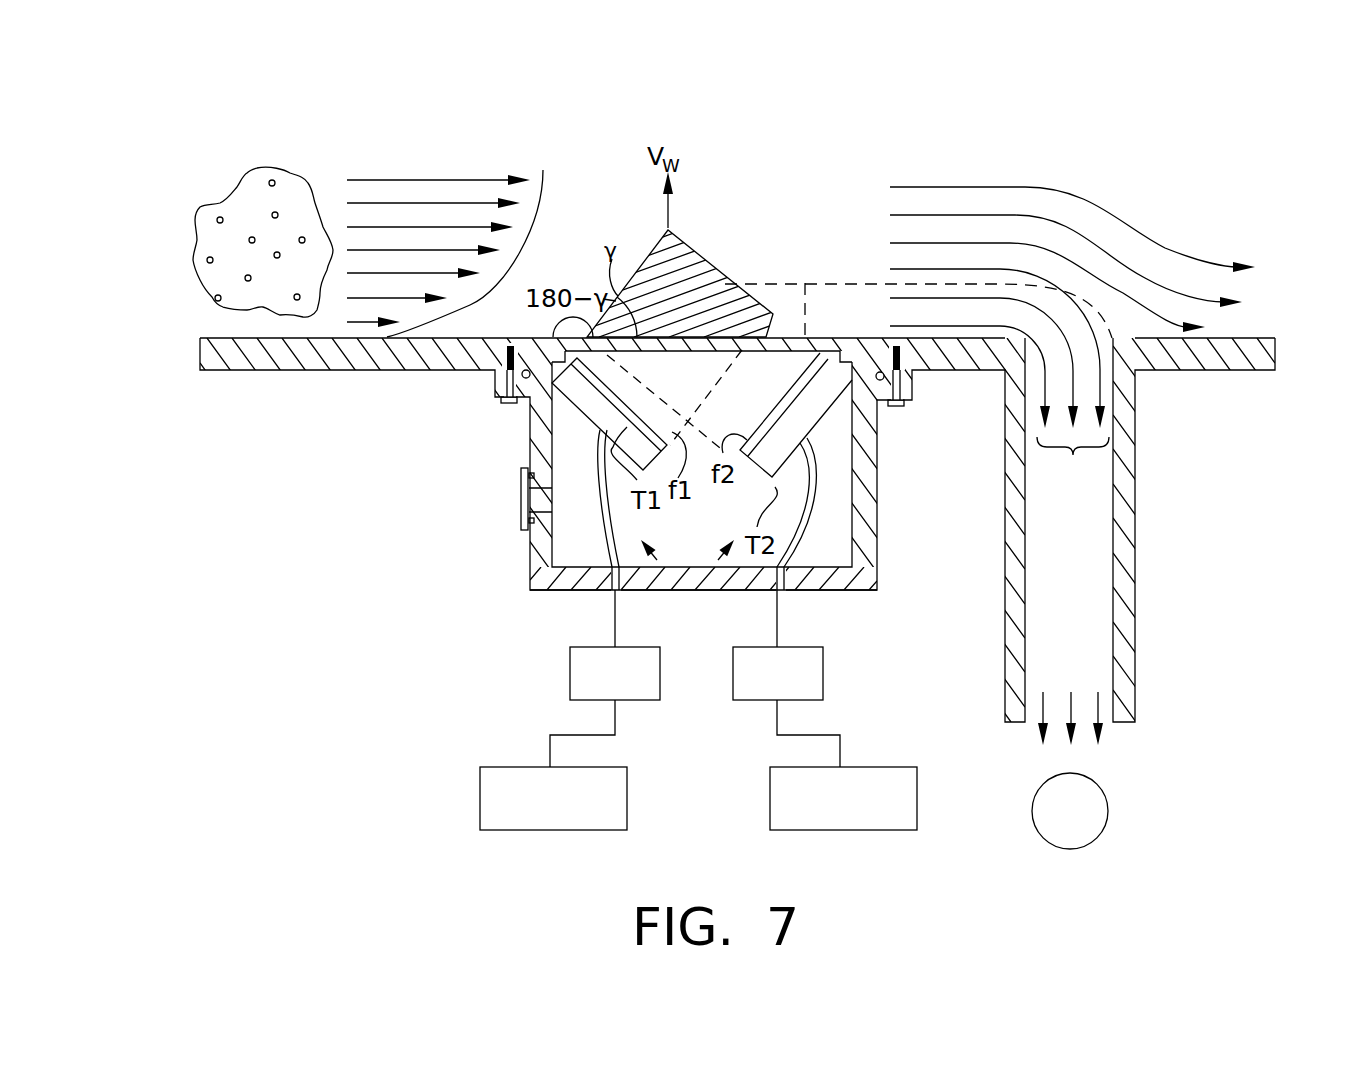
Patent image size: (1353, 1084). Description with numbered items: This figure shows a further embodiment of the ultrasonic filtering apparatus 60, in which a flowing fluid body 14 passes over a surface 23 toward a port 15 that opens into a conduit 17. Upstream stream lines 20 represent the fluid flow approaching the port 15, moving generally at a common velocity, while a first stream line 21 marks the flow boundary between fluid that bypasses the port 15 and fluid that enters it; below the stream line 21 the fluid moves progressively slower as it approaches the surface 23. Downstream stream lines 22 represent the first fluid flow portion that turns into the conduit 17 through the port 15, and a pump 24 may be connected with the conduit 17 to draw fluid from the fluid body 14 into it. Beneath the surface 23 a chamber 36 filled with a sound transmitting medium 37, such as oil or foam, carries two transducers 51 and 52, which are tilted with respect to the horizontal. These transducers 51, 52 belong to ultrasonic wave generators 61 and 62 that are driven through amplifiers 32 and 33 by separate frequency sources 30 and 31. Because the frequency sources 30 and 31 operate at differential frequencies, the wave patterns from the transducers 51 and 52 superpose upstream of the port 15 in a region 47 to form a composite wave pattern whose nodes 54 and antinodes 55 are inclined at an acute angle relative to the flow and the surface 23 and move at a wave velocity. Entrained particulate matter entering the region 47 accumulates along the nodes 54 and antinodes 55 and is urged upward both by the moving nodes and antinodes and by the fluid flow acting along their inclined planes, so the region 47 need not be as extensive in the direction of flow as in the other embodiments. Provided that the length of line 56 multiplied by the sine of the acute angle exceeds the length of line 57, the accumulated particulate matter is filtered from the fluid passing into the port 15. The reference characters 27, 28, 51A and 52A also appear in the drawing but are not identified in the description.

The fluid body 14 is at (975, 153).
The port 15 is at (1030, 355).
The conduit 17 is at (1022, 570).
The upstream stream lines 20 is at (282, 138).
The downstream flow line 21 is at (478, 178).
The downstream stream lines 22 is at (1073, 457).
The surface 23 is at (500, 338).
The pump 24 is at (1101, 782).
The particulate matter 27 is at (243, 172).
The flow streamlines 28 is at (1168, 250).
The frequency source 30 is at (627, 792).
The frequency source 31 is at (917, 792).
The amplifier 32 is at (570, 672).
The amplifier 33 is at (823, 672).
The chamber 36 is at (598, 576).
The sound transmitting medium 37 is at (600, 528).
The region 47 is at (740, 185).
The transducer 51 is at (590, 373).
The first transducer mount 51A is at (550, 430).
The transducer 52 is at (800, 437).
The second transducer mount 52A is at (800, 398).
The nodes 54 is at (670, 250).
The antinodes 55 is at (676, 250).
The line 56 is at (708, 300).
The line 57 is at (807, 303).
The ultrasonic filtering apparatus 60 is at (780, 338).
The ultrasonic wave generator 61 is at (662, 570).
The ultrasonic wave generator 62 is at (707, 570).